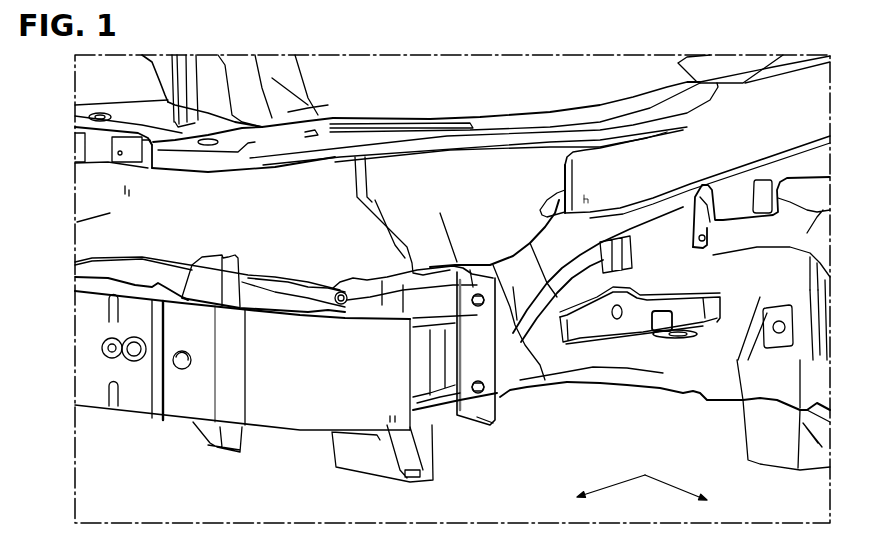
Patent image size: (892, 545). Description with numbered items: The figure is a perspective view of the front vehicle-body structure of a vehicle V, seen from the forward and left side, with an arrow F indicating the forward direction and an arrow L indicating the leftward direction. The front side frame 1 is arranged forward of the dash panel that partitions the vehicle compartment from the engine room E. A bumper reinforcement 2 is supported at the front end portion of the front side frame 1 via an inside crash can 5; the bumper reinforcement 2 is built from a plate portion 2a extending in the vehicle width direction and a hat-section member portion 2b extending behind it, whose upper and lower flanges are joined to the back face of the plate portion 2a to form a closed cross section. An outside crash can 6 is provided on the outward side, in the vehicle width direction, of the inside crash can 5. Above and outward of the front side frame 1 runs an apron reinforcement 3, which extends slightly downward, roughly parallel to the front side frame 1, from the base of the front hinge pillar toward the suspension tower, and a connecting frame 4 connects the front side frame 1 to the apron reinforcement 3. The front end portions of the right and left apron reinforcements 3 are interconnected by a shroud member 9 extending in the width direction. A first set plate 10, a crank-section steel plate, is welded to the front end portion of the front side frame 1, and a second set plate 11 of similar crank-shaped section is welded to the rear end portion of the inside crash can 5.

The front side frame 1 is at (104, 202).
The bumper reinforcement 2 is at (132, 413).
The plate portion 2a is at (280, 422).
The member portion 2b is at (430, 357).
The apron reinforcement 3 is at (817, 148).
The connecting frame 4 is at (596, 268).
The inside crash can 5 is at (304, 307).
The outside crash can 6 is at (443, 401).
The shroud member 9 is at (88, 111).
The first set plate 10 is at (503, 395).
The second set plate 11 is at (481, 401).
The vehicle V is at (487, 63).
The engine room E is at (470, 209).
The arrow F is at (612, 487).
The arrow L is at (673, 485).